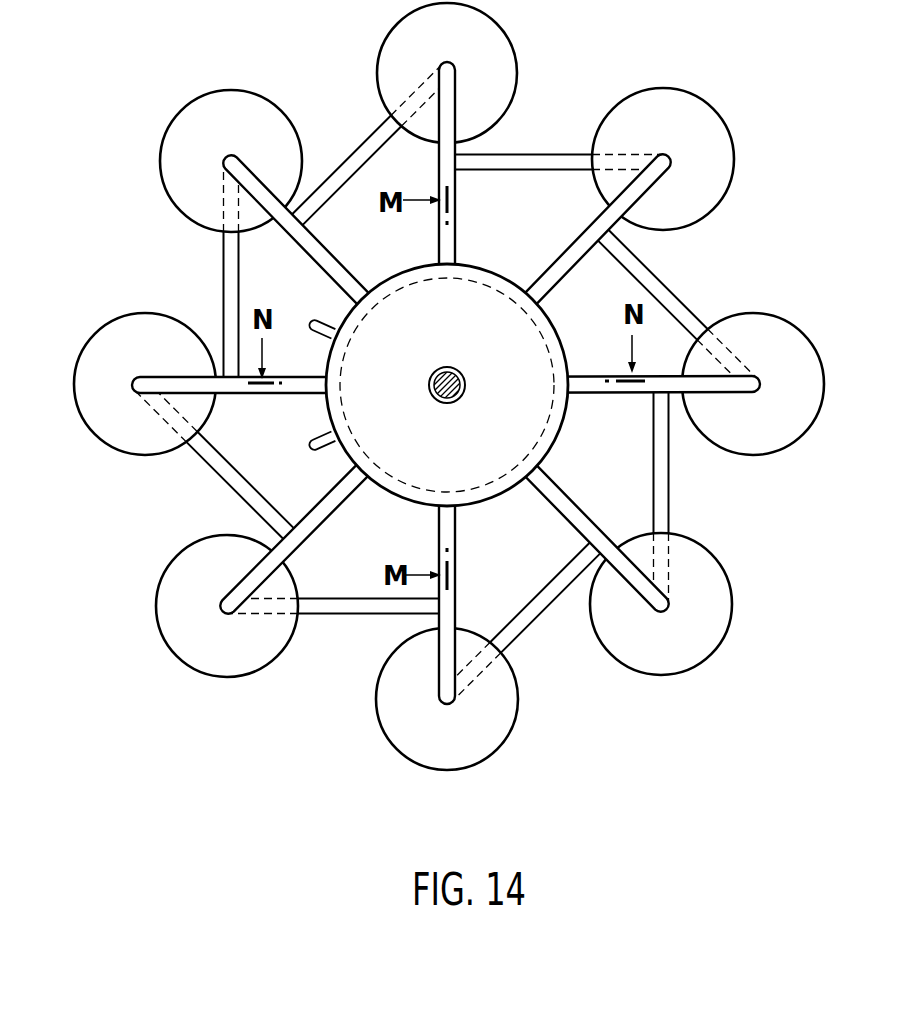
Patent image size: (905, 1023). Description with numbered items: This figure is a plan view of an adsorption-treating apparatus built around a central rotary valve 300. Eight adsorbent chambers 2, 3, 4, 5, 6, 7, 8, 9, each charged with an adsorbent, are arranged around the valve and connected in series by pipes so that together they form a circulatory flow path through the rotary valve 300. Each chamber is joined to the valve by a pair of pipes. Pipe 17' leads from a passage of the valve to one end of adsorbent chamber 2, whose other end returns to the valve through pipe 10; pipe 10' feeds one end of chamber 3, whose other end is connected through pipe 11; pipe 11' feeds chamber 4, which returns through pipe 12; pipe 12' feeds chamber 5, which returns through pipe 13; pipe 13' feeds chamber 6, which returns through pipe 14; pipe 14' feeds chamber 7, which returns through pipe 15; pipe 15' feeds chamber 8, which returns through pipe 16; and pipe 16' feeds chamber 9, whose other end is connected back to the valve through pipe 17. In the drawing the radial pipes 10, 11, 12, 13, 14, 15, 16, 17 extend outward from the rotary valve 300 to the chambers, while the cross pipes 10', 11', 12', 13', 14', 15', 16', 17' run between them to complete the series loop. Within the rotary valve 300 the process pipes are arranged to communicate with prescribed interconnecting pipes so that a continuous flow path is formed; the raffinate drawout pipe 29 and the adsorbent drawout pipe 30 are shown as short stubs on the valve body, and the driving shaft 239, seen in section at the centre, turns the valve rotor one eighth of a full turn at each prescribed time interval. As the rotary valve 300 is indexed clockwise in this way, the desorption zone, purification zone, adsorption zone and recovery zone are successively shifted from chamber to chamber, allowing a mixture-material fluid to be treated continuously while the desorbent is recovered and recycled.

The adsorbent chamber 2 is at (732, 142).
The adsorbent chamber 3 is at (796, 441).
The adsorbent chamber 4 is at (727, 628).
The adsorbent chamber 5 is at (499, 747).
The adsorbent chamber 6 is at (230, 678).
The adsorbent chamber 7 is at (140, 455).
The adsorbent chamber 8 is at (173, 202).
The adsorbent chamber 9 is at (509, 41).
The pipe 10 is at (573, 272).
The pipe 11 is at (603, 407).
The pipe 12 is at (554, 519).
The pipe 13 is at (424, 553).
The pipe 14 is at (325, 496).
The pipe 15 is at (280, 362).
The pipe 16 is at (337, 256).
The pipe 17 is at (498, 221).
The pipe 10' is at (674, 306).
The pipe 11' is at (690, 494).
The pipe 12' is at (524, 619).
The pipe 13' is at (337, 634).
The pipe 14' is at (217, 462).
The pipe 15' is at (197, 274).
The pipe 16' is at (369, 148).
The pipe 17' is at (555, 139).
The raffinate drawout pipe 29 is at (320, 433).
The adsorbent drawout pipe 30 is at (322, 323).
The driving shaft 239 is at (447, 367).
The rotary valve 300 is at (555, 435).